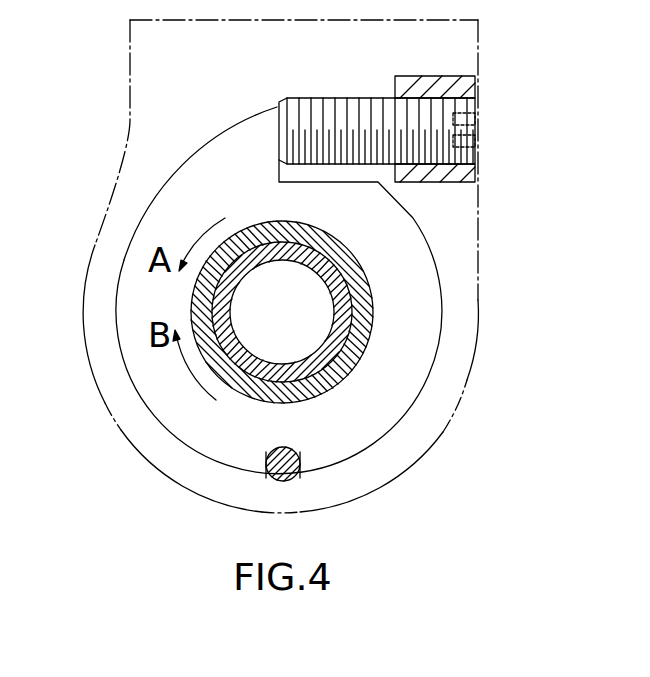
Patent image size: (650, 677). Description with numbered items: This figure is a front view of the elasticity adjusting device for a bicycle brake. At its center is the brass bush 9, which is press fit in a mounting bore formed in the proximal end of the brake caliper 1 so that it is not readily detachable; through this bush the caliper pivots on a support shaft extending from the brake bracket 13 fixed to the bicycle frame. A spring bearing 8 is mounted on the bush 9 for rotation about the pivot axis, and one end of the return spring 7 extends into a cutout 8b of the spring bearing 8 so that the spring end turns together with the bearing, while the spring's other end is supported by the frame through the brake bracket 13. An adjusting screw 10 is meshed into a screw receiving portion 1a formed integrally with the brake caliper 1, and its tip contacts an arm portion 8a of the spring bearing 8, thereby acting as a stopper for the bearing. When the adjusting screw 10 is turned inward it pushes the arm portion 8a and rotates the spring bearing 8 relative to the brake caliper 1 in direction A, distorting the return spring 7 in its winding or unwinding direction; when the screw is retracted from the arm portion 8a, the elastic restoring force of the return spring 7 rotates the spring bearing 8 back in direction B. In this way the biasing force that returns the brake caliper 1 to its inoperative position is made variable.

The brake caliper 1 is at (130, 100).
The screw receiving portion 1a is at (453, 183).
The return spring 7 is at (264, 462).
The spring bearing 8 is at (427, 315).
The arm portion 8a is at (263, 137).
The cutout 8b is at (297, 445).
The brass bush 9 is at (352, 268).
The adjusting screw 10 is at (361, 104).
The brake bracket 13 is at (358, 342).